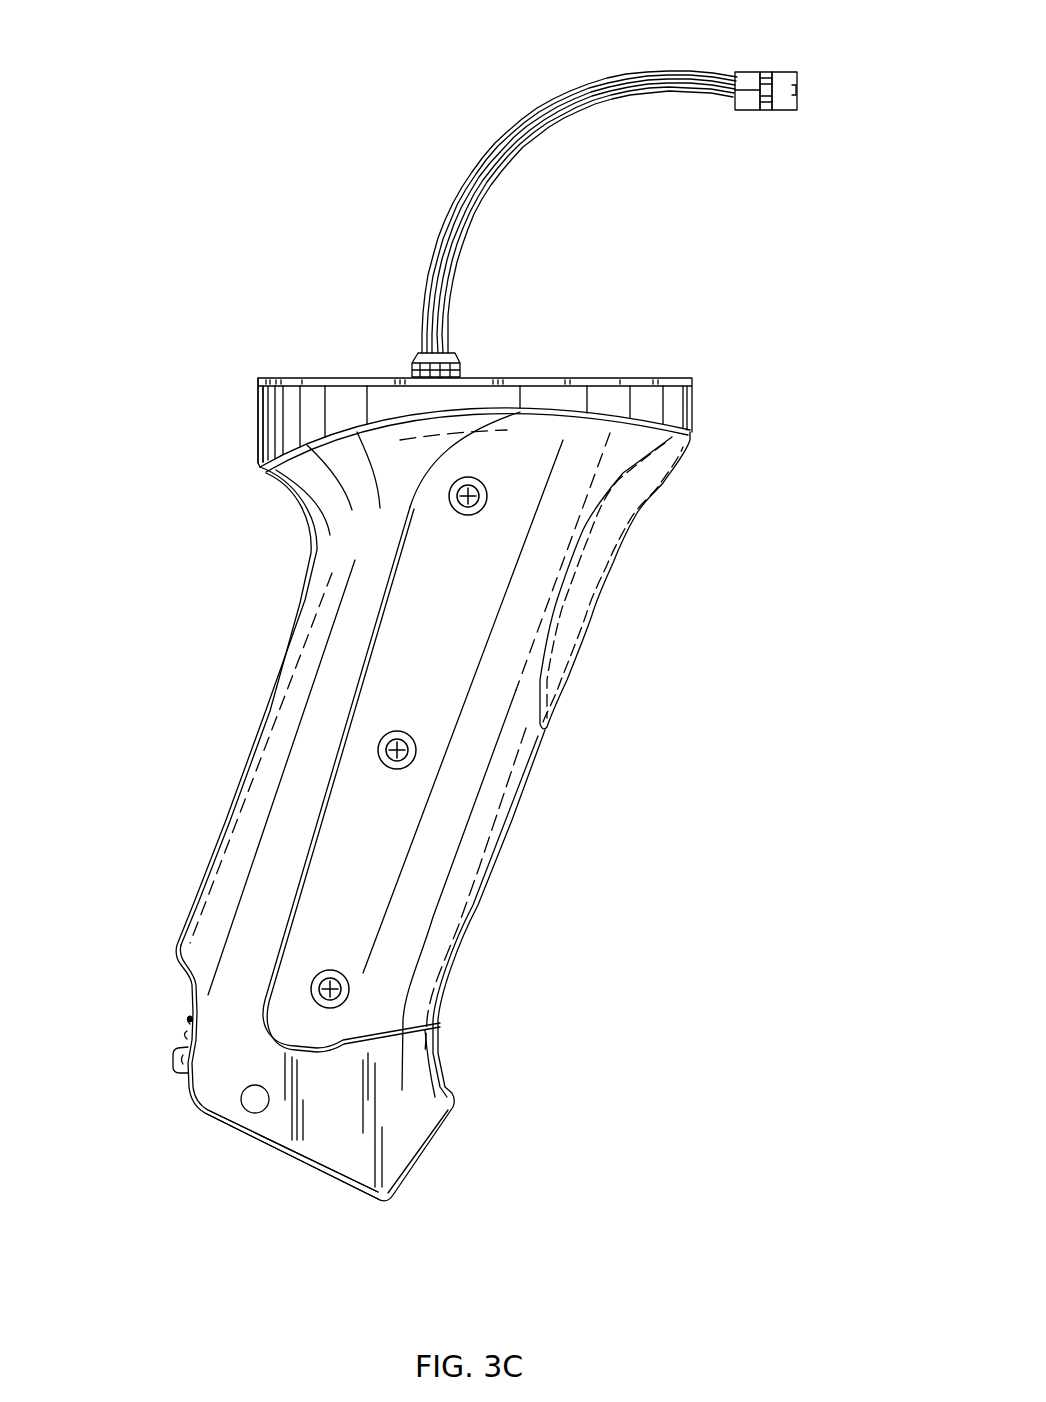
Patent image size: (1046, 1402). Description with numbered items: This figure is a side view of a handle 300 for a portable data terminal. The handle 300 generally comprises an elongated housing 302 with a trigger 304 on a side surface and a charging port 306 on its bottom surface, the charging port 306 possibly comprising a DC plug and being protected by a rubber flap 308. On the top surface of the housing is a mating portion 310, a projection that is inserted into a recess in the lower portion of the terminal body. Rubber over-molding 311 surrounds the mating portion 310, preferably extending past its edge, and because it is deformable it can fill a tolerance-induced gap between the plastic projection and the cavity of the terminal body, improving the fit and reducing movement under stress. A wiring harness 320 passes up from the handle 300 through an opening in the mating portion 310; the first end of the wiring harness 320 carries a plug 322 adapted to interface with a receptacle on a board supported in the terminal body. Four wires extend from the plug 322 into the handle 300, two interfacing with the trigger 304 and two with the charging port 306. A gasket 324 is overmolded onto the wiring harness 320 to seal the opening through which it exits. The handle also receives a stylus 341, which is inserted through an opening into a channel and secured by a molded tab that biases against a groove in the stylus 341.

The handle 300 is at (228, 95).
The elongated housing 302 is at (235, 710).
The trigger 304 is at (607, 567).
The charging port 306 is at (283, 1183).
The rubber flap 308 is at (285, 1152).
The mating portion 310 is at (625, 350).
The rubber over-molding 311 is at (258, 425).
The wiring harness 320 is at (585, 197).
The plug 322 is at (797, 74).
The gasket 324 is at (465, 374).
The stylus 341 is at (173, 1059).